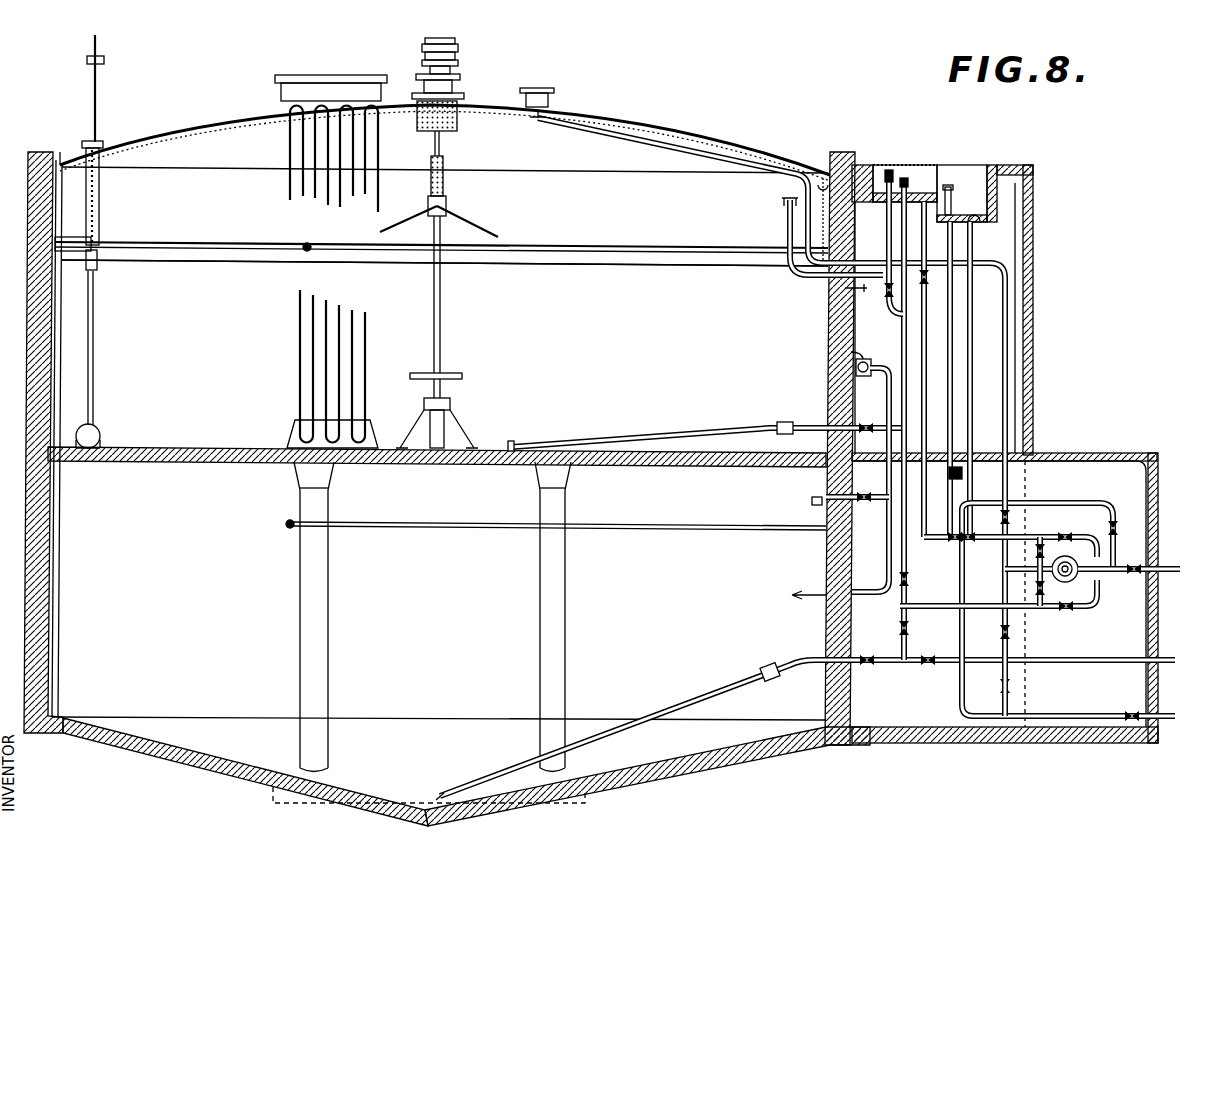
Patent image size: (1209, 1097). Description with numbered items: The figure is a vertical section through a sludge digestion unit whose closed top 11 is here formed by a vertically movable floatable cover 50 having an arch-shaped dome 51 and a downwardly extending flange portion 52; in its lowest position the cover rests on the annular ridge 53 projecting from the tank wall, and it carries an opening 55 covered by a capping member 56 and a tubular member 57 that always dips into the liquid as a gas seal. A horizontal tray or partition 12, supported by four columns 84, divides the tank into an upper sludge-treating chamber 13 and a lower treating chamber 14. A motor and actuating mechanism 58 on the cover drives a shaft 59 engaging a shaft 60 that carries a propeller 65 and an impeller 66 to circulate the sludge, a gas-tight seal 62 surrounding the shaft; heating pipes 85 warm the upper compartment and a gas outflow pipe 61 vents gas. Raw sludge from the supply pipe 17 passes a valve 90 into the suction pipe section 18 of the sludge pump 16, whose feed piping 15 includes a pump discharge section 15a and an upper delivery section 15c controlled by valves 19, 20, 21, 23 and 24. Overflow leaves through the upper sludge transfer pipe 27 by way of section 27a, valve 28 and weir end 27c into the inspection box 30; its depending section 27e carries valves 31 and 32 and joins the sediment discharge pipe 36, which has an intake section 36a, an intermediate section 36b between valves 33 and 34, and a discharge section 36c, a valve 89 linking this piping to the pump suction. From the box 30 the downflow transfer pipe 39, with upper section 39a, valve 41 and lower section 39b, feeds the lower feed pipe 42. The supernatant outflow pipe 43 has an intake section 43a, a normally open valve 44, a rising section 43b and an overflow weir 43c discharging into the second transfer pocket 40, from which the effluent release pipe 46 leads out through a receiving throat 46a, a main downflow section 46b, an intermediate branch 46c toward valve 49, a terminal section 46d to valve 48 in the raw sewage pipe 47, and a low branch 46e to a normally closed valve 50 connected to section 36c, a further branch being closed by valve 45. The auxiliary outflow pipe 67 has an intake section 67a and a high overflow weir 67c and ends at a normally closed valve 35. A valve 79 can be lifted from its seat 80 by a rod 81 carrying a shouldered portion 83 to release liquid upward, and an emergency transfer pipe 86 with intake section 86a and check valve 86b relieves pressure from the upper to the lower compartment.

The closed top 11 is at (598, 116).
The horizontal tray or partition 12 is at (213, 466).
The upper sludge-treating chamber 13 is at (444, 356).
The lower treating chamber 14 is at (444, 591).
The feed piping 15 is at (615, 232).
The pump discharge section 15a is at (1004, 578).
The upper feed delivery section 15c is at (665, 255).
The sludge pump 16 is at (1061, 579).
The raw-sludge supply pipe 17 is at (1153, 591).
The suction pipe section 18 is at (956, 612).
The valve 19 is at (1036, 596).
The valve 20 is at (1040, 545).
The valve 21 is at (1070, 537).
The valve 23 is at (998, 634).
The valve 24 is at (1010, 515).
The upper sludge transfer pipe 27 is at (625, 409).
The transfer pipe section 27a is at (690, 426).
The upper weir end 27c is at (910, 173).
The downwardly extending section 27e is at (906, 595).
The valve 28 is at (826, 441).
The inspection box or transfer pocket 30 is at (900, 165).
The valve 31 is at (905, 581).
The valve 32 is at (908, 634).
The valve 33 is at (866, 673).
The valve 34 is at (923, 673).
The normally closed valve 35 is at (886, 297).
The sediment discharge pipe 36 is at (672, 677).
The low intake section 36a is at (720, 701).
The intermediate section 36b is at (898, 672).
The discharge section 36c is at (1035, 668).
The downflow sludge transfer pipe 39 is at (910, 349).
The upper section 39a is at (924, 222).
The lower section 39b is at (930, 363).
The second inspection or transfer pocket 40 is at (973, 165).
The normally open valve 41 is at (935, 280).
The lower feed pipe 42 is at (608, 534).
The supernatant liquid outflow pipe 43 is at (770, 513).
The intake section 43a is at (813, 506).
The rising section 43b is at (958, 305).
The overflow weir 43c is at (963, 193).
The valve 44 is at (826, 489).
The valve 45 is at (948, 485).
The effluent release pipe 46 is at (1085, 351).
The receiving throat 46a is at (972, 226).
The main downflow section 46b is at (975, 340).
The intermediate branch 46c is at (1108, 509).
The terminal section 46d is at (1036, 727).
The low branch 46e is at (973, 716).
The raw sewage conduit 47 is at (1128, 731).
The valve 48 is at (1130, 713).
The valve 49 is at (1114, 528).
The floatable cover 50 is at (725, 114).
The arch-shaped dome 51 is at (648, 127).
The downwardly extending flange portion 52 is at (832, 140).
The annular corbel or circular ridge 53 is at (126, 250).
The opening 55 is at (552, 100).
The capping member 56 is at (538, 86).
The tubular member 57 is at (104, 211).
The motor and actuating mechanism 58 is at (432, 48).
The shaft 59 is at (445, 146).
The shaft 60 is at (446, 180).
The gas outflow pipe 61 is at (618, 143).
The gas-tight seal 62 is at (445, 100).
The propeller 65 is at (480, 232).
The impeller 66 is at (452, 370).
The emergency or auxiliary outflow pipe 67 is at (750, 228).
The intake section 67a is at (784, 236).
The high overflow weir section 67c is at (888, 172).
The valve 79 is at (98, 430).
The seat 80 is at (108, 448).
The rod 81 is at (95, 331).
The shouldered portion 83 is at (86, 62).
The columns 84 is at (298, 603).
The heating pipes 85 is at (291, 372).
The emergency transfer pipe 86 is at (775, 339).
The intake section 86a is at (845, 352).
The relief or check valve 86b is at (845, 386).
The valve 89 is at (1062, 614).
The valve 90 is at (1138, 564).